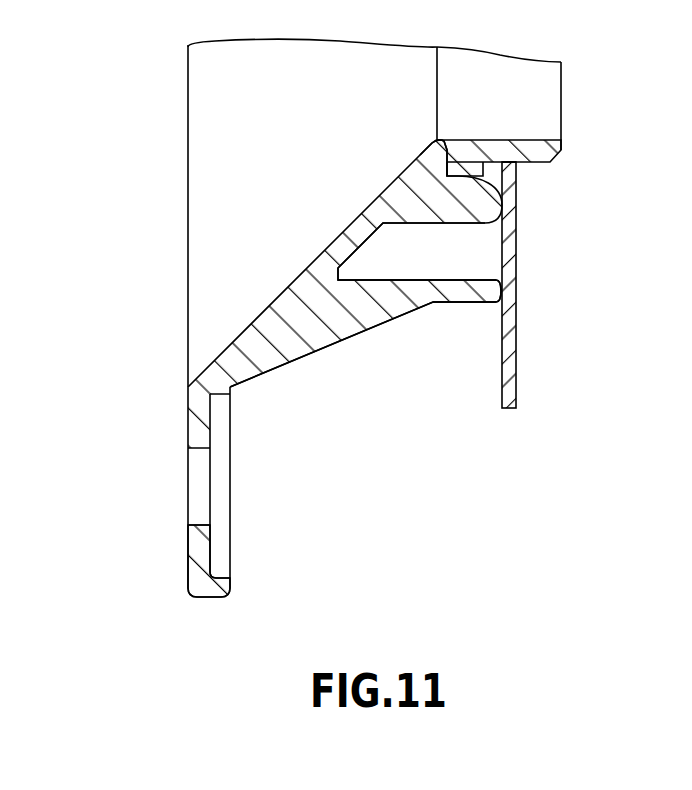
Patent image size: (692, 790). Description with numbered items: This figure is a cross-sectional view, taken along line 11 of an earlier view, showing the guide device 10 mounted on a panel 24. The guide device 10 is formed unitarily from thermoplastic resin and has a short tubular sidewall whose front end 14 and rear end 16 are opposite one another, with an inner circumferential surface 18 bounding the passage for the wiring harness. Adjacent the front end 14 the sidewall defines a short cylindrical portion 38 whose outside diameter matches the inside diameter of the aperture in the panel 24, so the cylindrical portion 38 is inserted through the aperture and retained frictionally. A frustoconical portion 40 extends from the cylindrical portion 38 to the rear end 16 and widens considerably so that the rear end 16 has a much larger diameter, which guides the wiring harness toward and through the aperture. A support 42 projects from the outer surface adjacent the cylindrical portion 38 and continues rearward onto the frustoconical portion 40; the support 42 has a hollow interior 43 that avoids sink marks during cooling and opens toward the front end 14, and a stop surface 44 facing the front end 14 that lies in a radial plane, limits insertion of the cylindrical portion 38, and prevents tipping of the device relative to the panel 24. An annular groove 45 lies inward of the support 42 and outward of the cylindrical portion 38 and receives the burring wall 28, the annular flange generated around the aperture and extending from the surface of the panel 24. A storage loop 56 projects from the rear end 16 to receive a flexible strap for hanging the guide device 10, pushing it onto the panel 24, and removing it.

The guide device 10 is at (127, 188).
The section line 11- 11 is at (517, 168).
The front end 14 is at (562, 108).
The rear end 16 is at (188, 312).
The inner circumferential surface 18 is at (305, 127).
The panel 24 is at (518, 342).
The burring wall 28 is at (477, 165).
The cylindrical portion 38 is at (553, 159).
The frustoconical portion 40 is at (222, 253).
The support 42 is at (443, 303).
The hollow interior 43 is at (430, 266).
The stop surface 44 is at (503, 283).
The annular groove 45 is at (447, 162).
The storage loop 56 is at (188, 567).